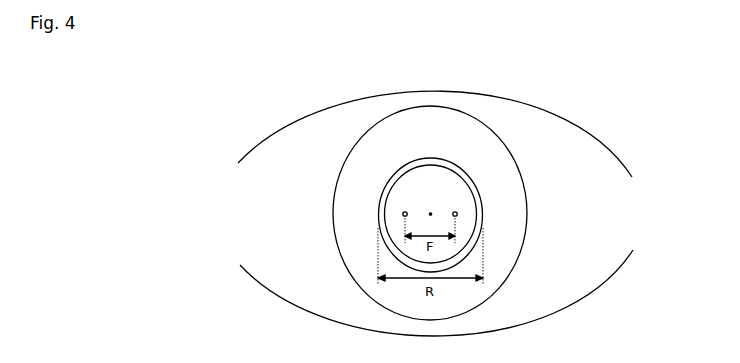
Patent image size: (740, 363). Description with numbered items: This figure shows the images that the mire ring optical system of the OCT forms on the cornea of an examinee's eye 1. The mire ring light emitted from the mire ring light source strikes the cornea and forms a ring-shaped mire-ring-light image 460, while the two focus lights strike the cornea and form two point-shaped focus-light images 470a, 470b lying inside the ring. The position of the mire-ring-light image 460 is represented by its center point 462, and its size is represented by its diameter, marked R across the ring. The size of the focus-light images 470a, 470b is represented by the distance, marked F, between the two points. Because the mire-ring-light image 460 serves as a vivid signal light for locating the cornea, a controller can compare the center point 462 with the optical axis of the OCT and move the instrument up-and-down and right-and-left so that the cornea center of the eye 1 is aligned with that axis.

The examinee's eye 1 is at (548, 120).
The mire-ring-light image 460 is at (379, 193).
The center point of the mire-ring-light image 462 is at (430, 211).
The focus-light image 470a is at (407, 211).
The focus-light image 470b is at (457, 211).